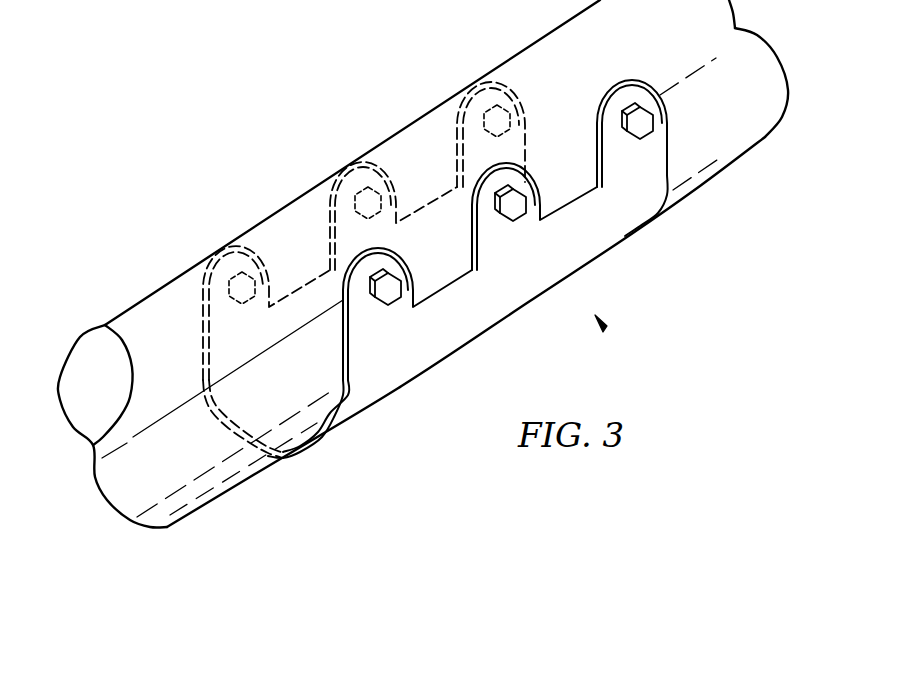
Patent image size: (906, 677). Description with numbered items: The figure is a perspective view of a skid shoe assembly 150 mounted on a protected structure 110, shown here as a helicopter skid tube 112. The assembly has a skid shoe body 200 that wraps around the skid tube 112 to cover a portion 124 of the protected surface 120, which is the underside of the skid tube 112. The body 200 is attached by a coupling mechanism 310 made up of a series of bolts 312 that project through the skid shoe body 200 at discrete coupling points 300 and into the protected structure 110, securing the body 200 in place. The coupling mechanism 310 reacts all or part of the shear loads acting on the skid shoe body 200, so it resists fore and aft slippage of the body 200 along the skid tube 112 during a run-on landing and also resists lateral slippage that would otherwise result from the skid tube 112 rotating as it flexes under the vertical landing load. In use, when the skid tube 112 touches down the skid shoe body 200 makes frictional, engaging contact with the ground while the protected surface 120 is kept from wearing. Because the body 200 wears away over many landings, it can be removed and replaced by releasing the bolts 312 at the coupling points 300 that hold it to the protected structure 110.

The protected structure 110 is at (412, 264).
The helicopter skid tube 112 is at (161, 286).
The protected surface 120 is at (216, 485).
The portion of the protected surface 124 is at (397, 390).
The skid shoe assembly 150 is at (604, 331).
The skid shoe body 200 is at (483, 320).
The coupling points 300 is at (476, 212).
The coupling mechanism 310 is at (546, 227).
The bolt 312 is at (389, 291).